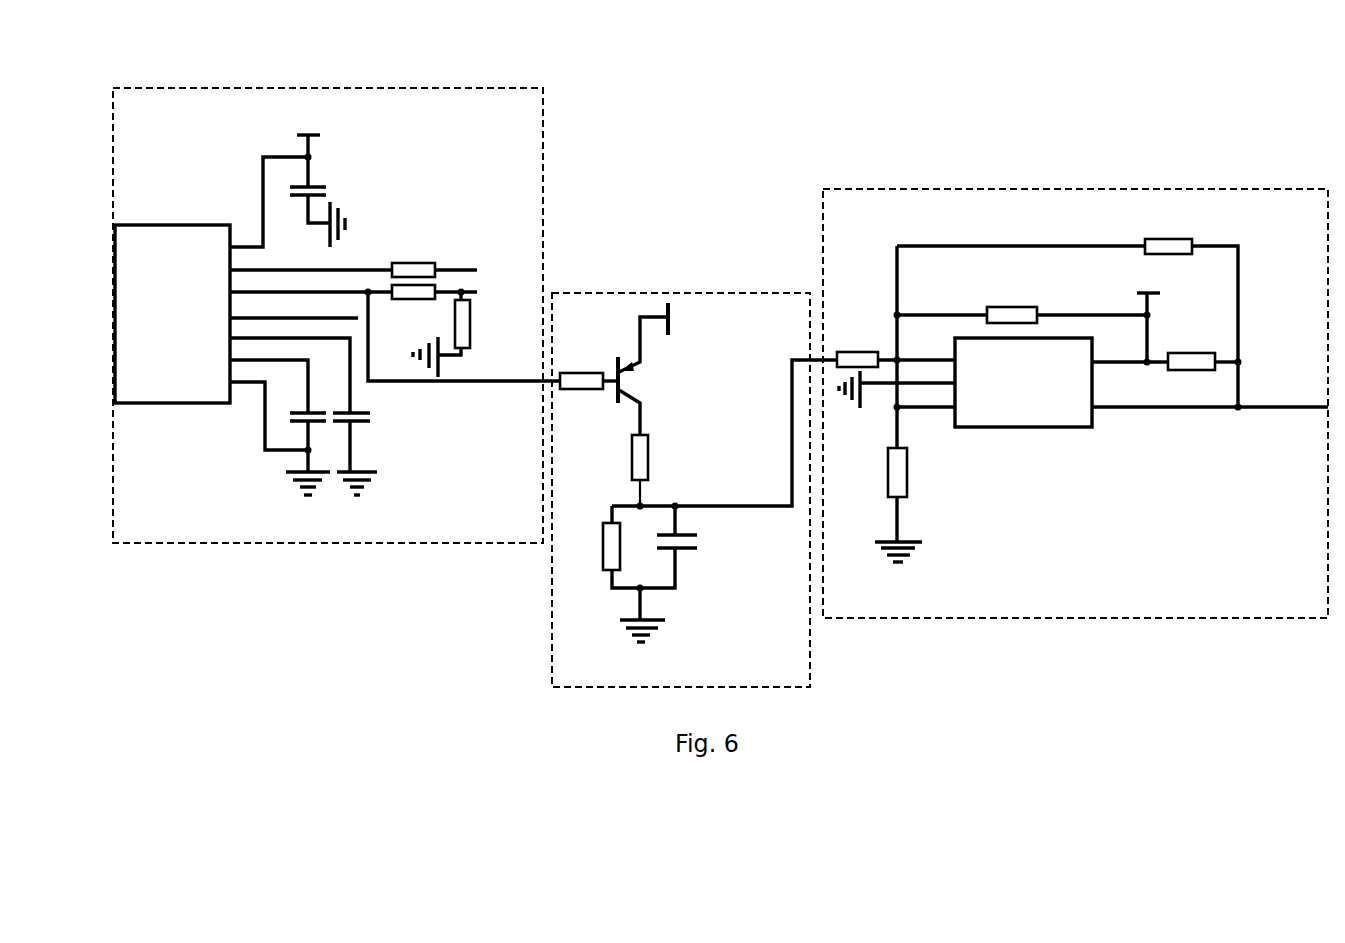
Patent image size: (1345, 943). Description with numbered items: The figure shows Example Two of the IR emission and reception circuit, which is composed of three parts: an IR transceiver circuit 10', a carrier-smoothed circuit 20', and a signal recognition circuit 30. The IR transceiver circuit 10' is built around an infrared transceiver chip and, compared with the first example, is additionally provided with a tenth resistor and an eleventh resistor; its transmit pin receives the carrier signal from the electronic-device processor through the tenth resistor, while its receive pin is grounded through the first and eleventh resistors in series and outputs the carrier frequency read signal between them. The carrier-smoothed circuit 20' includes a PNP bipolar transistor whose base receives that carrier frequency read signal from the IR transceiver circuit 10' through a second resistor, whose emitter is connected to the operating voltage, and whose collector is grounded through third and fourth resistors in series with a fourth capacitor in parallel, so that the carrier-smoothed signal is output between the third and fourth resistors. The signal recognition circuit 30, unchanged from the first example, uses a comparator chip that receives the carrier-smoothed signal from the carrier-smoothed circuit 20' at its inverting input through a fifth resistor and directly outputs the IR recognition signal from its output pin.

The IR transceiver circuit 10' is at (336, 288).
The carrier-smoothed circuit 20' is at (694, 463).
The signal recognition circuit 30 is at (1055, 207).